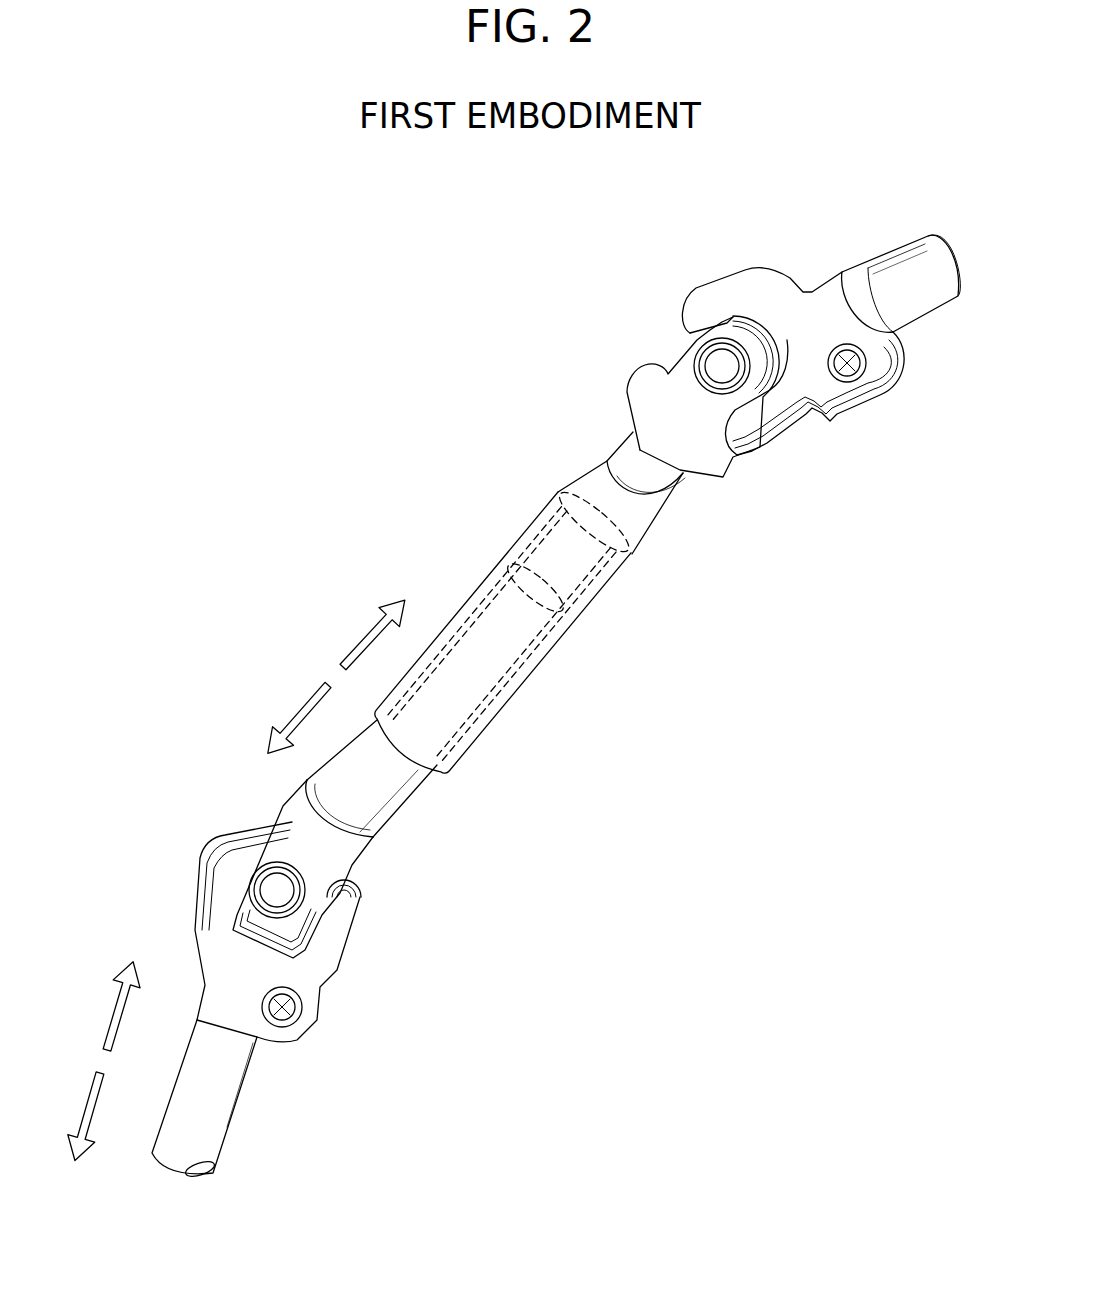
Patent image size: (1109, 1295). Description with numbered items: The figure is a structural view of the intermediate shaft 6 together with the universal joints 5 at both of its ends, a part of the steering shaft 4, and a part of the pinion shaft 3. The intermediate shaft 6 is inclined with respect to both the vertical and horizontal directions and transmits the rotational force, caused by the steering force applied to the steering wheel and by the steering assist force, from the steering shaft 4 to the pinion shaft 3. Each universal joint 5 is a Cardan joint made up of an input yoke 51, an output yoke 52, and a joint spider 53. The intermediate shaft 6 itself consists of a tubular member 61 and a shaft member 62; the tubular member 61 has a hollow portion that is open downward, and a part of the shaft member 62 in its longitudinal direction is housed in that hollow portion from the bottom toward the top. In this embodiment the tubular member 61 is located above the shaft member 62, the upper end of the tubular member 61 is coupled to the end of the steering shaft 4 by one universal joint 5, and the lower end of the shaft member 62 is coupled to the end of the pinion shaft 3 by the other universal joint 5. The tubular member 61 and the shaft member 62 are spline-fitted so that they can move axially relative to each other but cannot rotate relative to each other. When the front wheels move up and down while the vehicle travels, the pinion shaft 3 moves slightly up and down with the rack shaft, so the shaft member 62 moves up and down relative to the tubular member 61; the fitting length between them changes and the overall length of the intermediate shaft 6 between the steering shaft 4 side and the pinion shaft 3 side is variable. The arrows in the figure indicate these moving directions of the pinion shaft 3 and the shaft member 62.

The pinion shaft 3 is at (218, 1093).
The steering shaft 4 is at (918, 300).
The universal joint 5 is at (507, 611).
The input yoke 51 is at (773, 287).
The output yoke 52 is at (687, 378).
The joint spider 53 is at (722, 360).
The intermediate shaft 6 is at (496, 660).
The tubular member 61 is at (501, 662).
The shaft member 62 is at (398, 800).